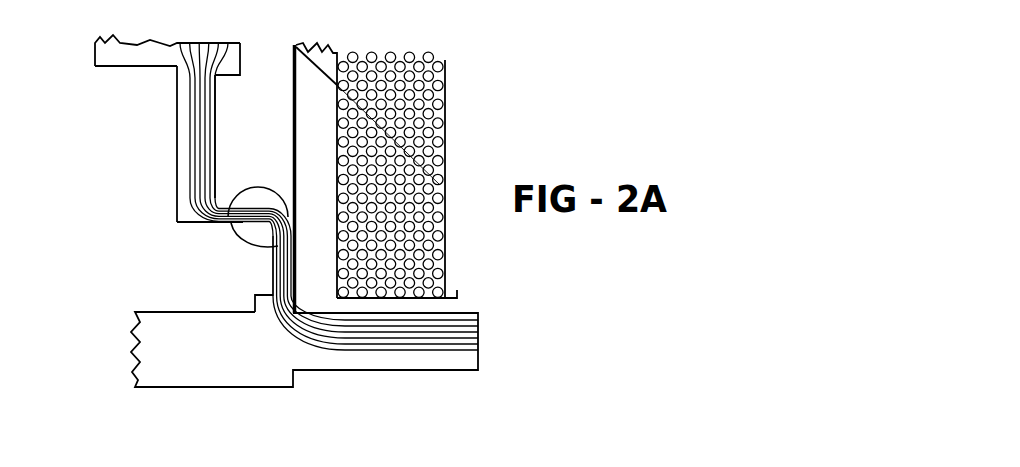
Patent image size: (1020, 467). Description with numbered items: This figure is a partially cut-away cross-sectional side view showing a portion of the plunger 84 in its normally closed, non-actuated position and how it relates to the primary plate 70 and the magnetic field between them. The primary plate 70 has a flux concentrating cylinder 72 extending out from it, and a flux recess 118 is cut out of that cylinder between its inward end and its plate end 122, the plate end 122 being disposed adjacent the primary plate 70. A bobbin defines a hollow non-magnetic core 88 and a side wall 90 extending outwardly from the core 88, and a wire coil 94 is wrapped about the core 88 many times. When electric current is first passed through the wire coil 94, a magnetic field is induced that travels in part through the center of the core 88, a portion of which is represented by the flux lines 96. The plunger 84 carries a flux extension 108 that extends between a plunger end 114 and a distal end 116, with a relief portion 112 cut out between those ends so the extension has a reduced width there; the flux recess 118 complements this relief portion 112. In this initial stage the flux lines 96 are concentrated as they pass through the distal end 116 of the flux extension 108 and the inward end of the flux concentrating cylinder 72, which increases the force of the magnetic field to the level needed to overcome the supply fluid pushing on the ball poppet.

The primary plate 70 is at (242, 387).
The flux concentrating cylinder 72 is at (261, 195).
The plunger 84 is at (113, 66).
The non-magnetic core 88 is at (293, 103).
The side wall 90 is at (457, 290).
The wire coil 94 is at (405, 55).
The flux lines 96 is at (212, 182).
The flux extension 108 is at (176, 90).
The relief portion 112 is at (215, 137).
The plunger end 114 is at (232, 75).
The distal end 116 is at (197, 223).
The flux recess 118 is at (274, 267).
The plate end 122 is at (253, 305).